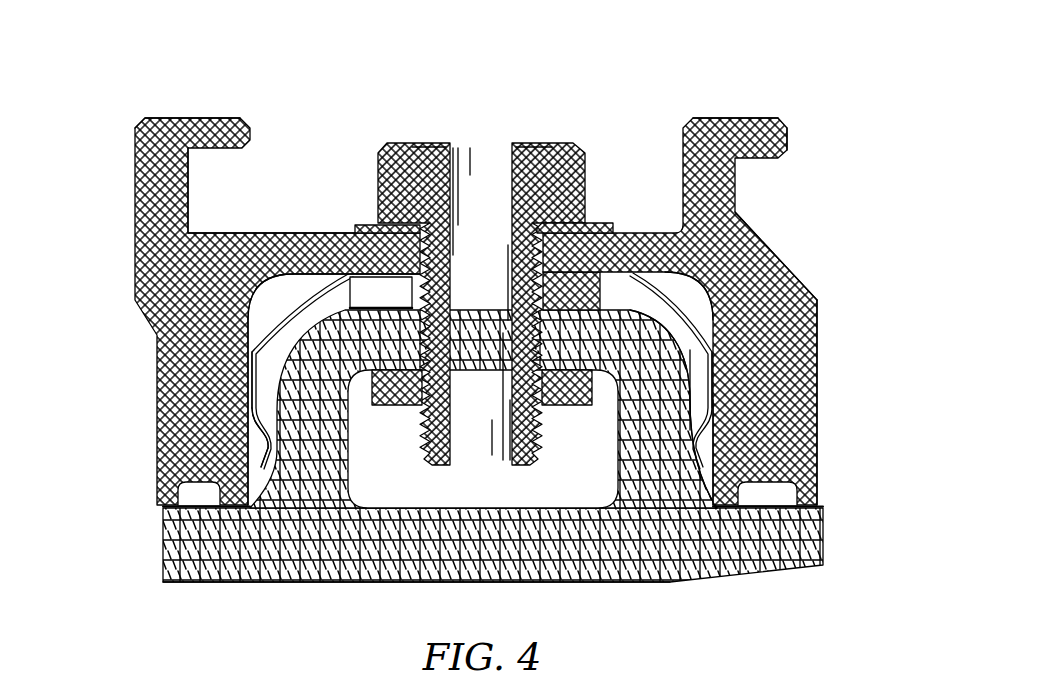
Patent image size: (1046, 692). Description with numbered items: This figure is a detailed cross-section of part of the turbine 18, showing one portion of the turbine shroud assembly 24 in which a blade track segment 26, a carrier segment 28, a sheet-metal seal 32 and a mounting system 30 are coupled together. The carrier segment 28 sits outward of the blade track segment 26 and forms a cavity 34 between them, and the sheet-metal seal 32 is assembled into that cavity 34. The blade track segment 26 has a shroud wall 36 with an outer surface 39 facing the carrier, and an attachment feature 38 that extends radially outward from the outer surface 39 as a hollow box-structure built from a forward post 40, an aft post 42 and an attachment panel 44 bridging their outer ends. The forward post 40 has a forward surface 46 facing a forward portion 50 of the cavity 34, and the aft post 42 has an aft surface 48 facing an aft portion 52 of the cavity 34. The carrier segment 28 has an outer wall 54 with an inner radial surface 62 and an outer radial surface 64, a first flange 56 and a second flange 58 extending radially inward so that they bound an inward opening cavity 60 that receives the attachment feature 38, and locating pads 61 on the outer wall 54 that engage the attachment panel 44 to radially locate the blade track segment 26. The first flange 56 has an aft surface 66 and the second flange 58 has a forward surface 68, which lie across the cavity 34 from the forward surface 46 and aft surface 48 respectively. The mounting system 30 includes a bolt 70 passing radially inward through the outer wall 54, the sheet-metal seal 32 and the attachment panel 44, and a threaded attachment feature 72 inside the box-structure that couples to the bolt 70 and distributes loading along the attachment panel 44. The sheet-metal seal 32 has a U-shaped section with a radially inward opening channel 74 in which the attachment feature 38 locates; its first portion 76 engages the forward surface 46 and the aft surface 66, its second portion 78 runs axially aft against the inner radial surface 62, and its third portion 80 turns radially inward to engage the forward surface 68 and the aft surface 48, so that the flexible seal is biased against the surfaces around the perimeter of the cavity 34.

The turbine 18 is at (800, 73).
The turbine shroud assembly 24 is at (815, 115).
The blade track segment 26 is at (808, 579).
The carrier segment 28 is at (803, 133).
The mounting system 30 is at (420, 130).
The sheet-metal seal 32 is at (252, 435).
The cavity 34 is at (252, 315).
The shroud wall 36 is at (190, 504).
The attachment feature 38 is at (342, 295).
The outer surface 39 is at (245, 583).
The forward post 40 is at (305, 455).
The aft post 42 is at (665, 392).
The attachment panel 44 is at (550, 355).
The forward surface 46 is at (250, 390).
The aft surface 48 is at (687, 370).
The forward portion 50 is at (248, 385).
The aft portion 52 is at (704, 345).
The outer wall 54 is at (275, 240).
The first flange 56 is at (250, 400).
The second flange 58 is at (770, 460).
The inward opening cavity 60 is at (689, 297).
The locating pads 61 is at (598, 290).
The inner radial surface 62 is at (272, 290).
The outer radial surface 64 is at (221, 233).
The aft surface 66 is at (256, 454).
The forward surface 68 is at (714, 425).
The bolt 70 is at (535, 143).
The threaded attachment feature 72 is at (560, 405).
The radially inward opening channel 74 is at (252, 370).
The first portion 76 is at (252, 400).
The second portion 78 is at (378, 256).
The third portion 80 is at (684, 455).